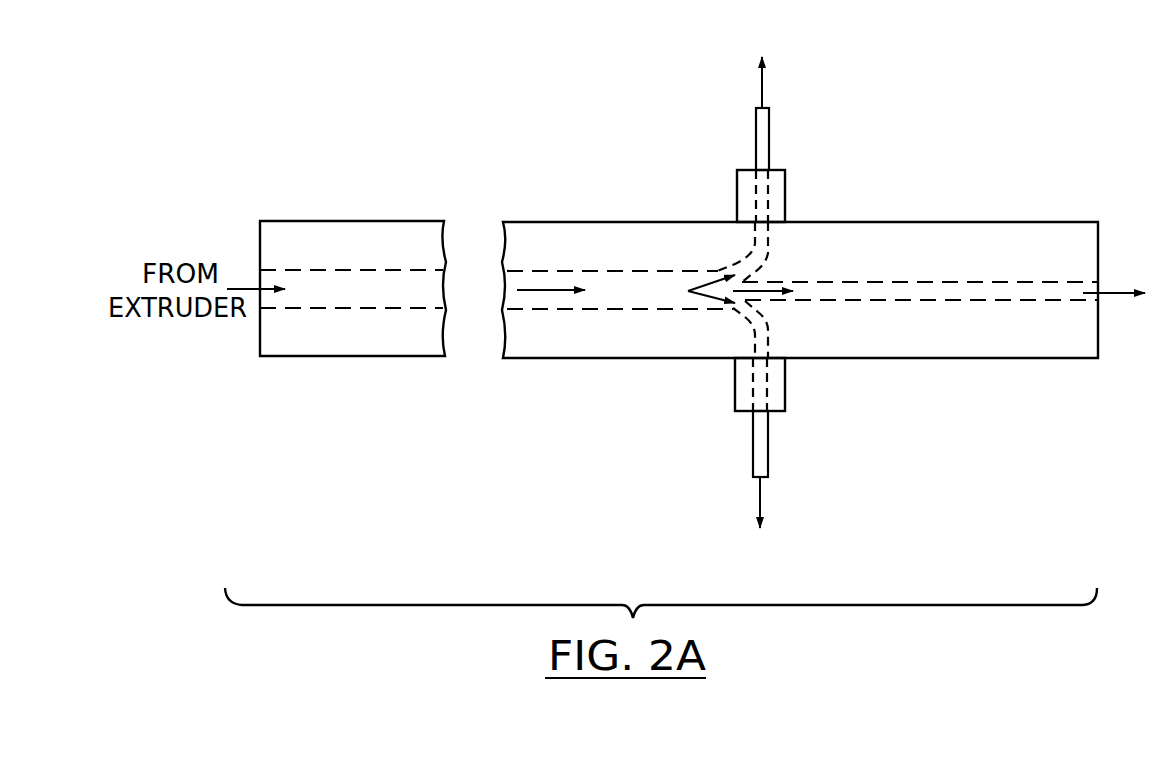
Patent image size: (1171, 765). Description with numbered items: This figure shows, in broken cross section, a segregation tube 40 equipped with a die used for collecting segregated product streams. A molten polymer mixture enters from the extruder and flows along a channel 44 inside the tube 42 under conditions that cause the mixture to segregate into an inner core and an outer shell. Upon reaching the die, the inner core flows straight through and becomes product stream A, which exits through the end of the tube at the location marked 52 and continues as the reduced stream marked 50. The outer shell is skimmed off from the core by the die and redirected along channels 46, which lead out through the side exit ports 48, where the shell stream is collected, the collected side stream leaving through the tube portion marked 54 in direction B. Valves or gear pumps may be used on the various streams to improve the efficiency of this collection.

The segregation tube 40 is at (965, 148).
The tube 42 is at (594, 222).
The channel 44 is at (352, 308).
The channels 46 is at (760, 269).
The side exit ports 48 is at (785, 175).
The reduced main stream 50 is at (917, 300).
The main outlet 52 is at (1098, 283).
The side stream outlet tube 54 is at (768, 477).